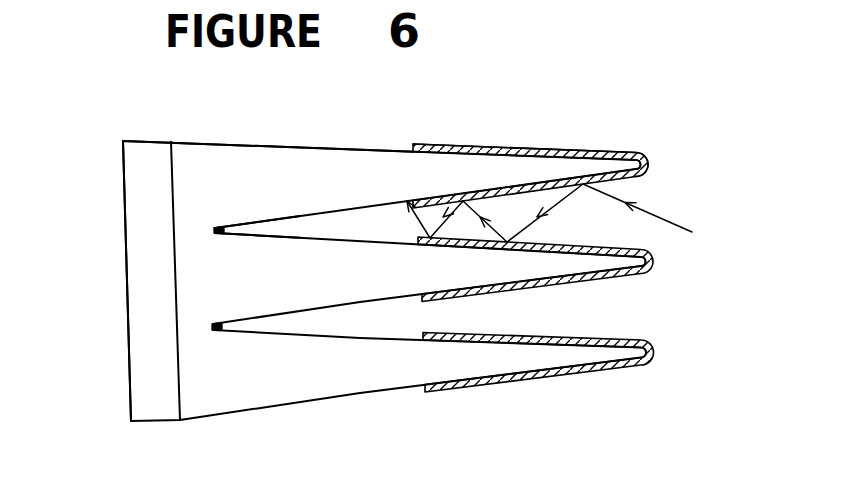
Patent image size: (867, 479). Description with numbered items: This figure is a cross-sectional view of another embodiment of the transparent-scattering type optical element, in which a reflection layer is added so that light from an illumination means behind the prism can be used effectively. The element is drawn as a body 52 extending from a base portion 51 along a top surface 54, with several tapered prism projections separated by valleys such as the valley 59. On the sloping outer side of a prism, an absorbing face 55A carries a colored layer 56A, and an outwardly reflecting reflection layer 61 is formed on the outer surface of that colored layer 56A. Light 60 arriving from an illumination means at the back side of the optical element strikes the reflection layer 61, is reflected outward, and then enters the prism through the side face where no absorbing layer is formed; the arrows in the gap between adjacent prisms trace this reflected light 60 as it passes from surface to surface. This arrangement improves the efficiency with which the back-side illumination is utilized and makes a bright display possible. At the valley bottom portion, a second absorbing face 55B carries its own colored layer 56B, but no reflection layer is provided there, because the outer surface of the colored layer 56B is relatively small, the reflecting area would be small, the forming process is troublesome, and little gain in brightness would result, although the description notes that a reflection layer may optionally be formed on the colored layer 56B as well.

The base block 51 is at (151, 140).
The substrate body with teeth 52 is at (341, 107).
The top surface 54 is at (253, 142).
The absorbing face 55A is at (443, 143).
The colored layer 56A is at (525, 152).
The reflection layer 61 is at (610, 150).
The light 60 is at (677, 225).
The notch between teeth 59 is at (214, 230).
The absorbing face 55B is at (212, 233).
The colored layer 56B is at (216, 231).